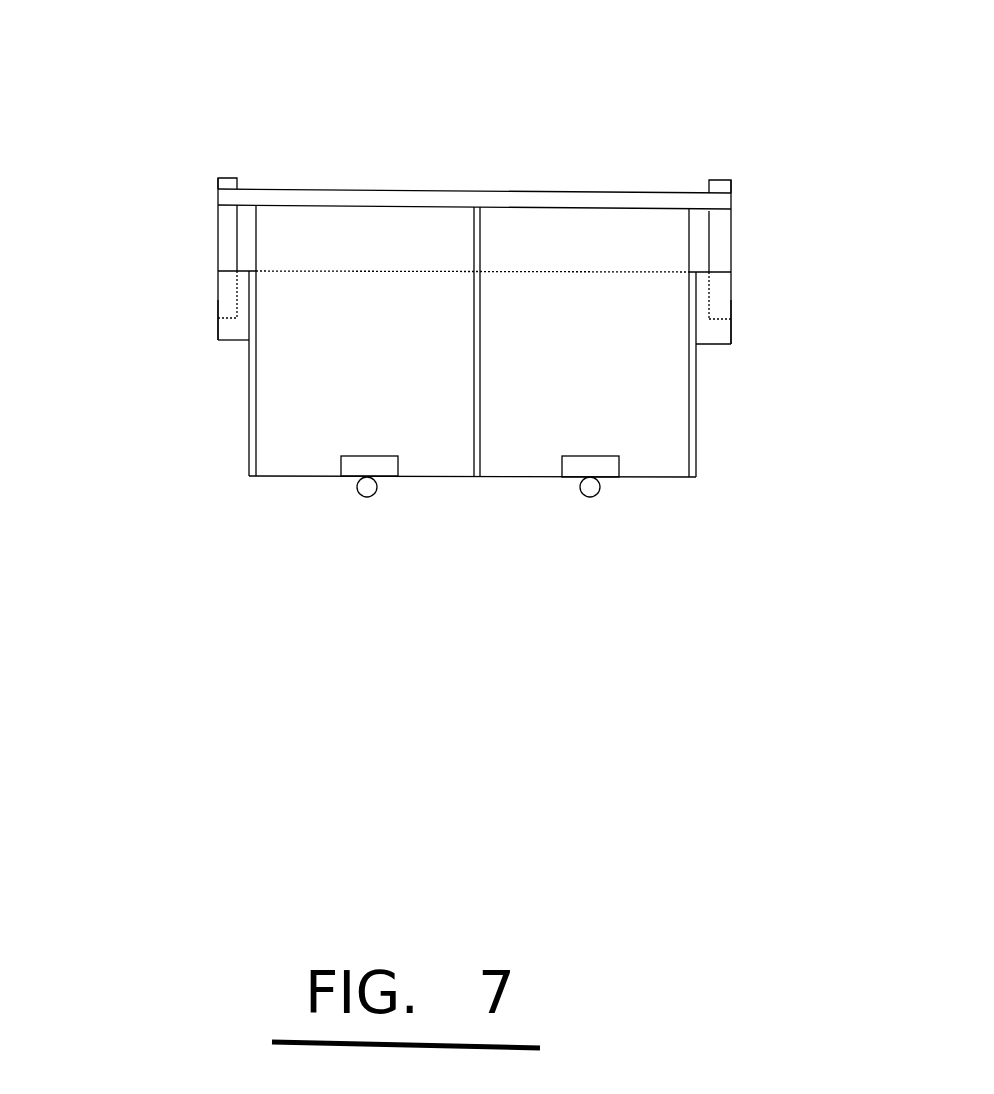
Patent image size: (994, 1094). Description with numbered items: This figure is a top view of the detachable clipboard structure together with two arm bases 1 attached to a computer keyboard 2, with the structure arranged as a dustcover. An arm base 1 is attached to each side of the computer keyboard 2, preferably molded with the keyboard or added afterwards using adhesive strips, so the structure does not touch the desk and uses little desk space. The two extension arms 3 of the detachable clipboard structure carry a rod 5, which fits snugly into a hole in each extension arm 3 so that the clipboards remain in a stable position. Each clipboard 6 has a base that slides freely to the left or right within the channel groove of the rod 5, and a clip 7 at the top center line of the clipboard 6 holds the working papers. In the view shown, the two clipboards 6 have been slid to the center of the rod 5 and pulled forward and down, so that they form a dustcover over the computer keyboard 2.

The arm base 1 is at (233, 343).
The computer keyboard 2 is at (245, 427).
The extension arm 3 is at (225, 246).
The rod 5 is at (519, 192).
The clipboard 6 is at (295, 437).
The clip 7 is at (368, 512).